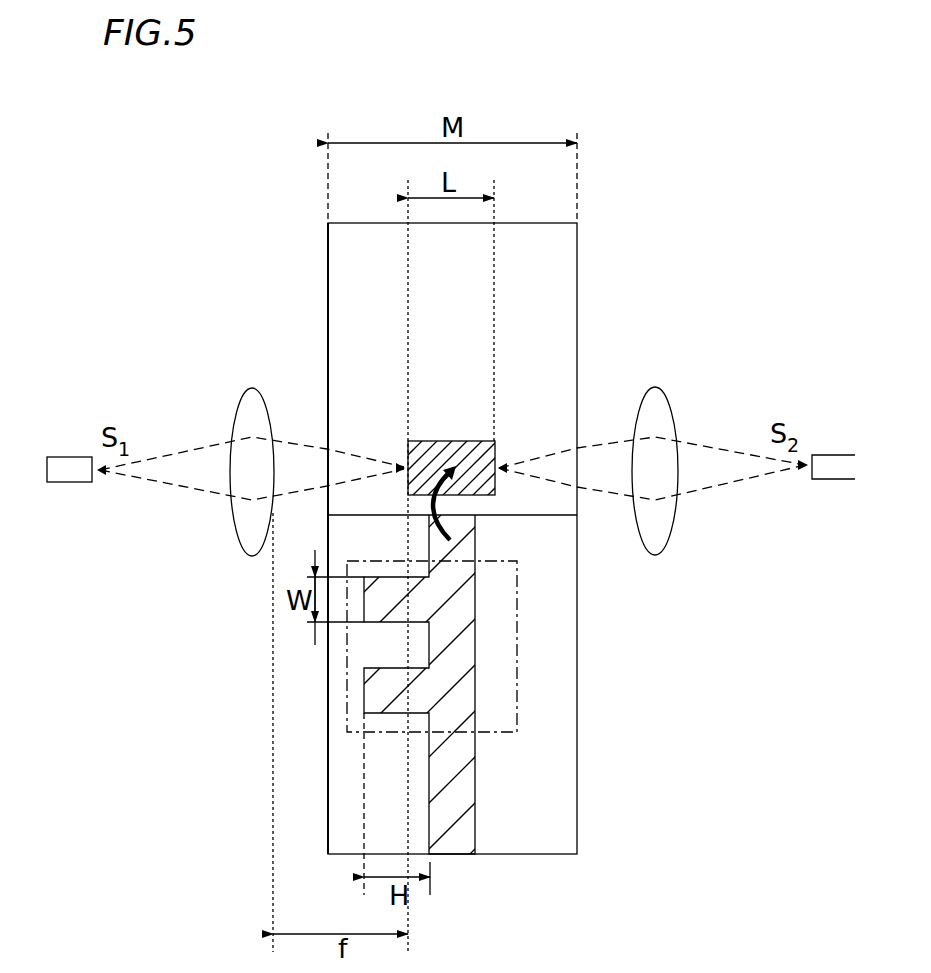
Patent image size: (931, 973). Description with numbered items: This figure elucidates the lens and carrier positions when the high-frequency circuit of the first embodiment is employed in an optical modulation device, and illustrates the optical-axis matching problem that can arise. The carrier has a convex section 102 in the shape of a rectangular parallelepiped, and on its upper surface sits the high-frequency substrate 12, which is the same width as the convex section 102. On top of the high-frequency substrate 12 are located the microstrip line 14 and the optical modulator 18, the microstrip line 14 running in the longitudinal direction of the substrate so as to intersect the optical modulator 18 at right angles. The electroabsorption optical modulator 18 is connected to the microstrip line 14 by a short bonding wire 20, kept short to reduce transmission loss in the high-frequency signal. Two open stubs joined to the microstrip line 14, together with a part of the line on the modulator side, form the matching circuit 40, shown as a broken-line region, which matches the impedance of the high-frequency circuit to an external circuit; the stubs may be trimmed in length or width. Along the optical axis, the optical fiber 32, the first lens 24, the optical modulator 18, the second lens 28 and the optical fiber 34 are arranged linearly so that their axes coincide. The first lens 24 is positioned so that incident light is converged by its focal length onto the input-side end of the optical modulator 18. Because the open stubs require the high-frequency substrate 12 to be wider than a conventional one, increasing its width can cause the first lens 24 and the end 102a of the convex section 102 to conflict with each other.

The convex section 102 is at (568, 262).
The end of the convex section 102a is at (318, 265).
The high-frequency substrate 12 is at (548, 780).
The microstrip line 14 is at (472, 836).
The optical modulator 18 is at (483, 490).
The bonding wire 20 is at (452, 518).
The matching circuit 40 is at (517, 703).
The first lens 24 is at (252, 400).
The second lens 28 is at (655, 400).
The optical fiber 32 is at (63, 465).
The optical fiber 34 is at (840, 462).